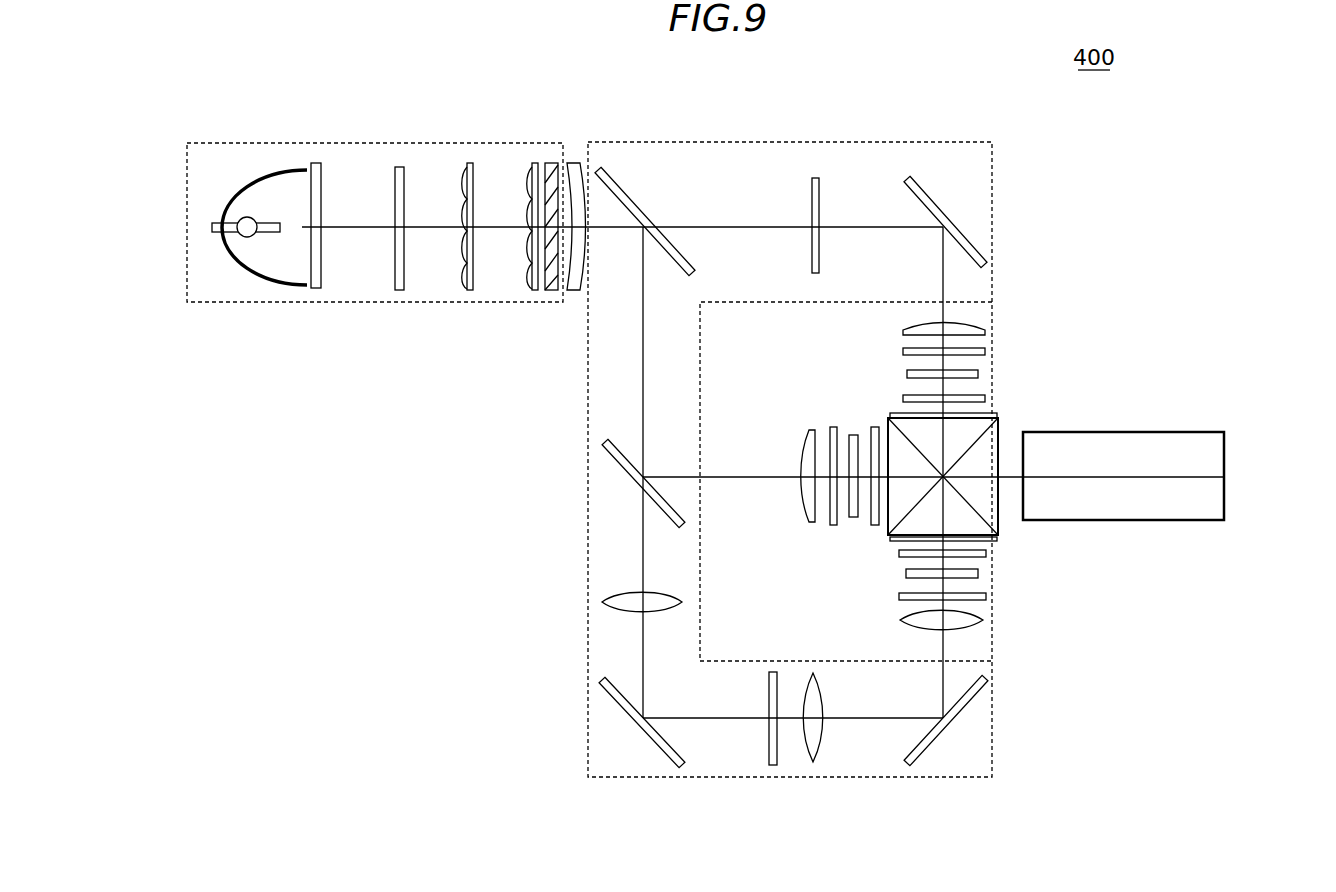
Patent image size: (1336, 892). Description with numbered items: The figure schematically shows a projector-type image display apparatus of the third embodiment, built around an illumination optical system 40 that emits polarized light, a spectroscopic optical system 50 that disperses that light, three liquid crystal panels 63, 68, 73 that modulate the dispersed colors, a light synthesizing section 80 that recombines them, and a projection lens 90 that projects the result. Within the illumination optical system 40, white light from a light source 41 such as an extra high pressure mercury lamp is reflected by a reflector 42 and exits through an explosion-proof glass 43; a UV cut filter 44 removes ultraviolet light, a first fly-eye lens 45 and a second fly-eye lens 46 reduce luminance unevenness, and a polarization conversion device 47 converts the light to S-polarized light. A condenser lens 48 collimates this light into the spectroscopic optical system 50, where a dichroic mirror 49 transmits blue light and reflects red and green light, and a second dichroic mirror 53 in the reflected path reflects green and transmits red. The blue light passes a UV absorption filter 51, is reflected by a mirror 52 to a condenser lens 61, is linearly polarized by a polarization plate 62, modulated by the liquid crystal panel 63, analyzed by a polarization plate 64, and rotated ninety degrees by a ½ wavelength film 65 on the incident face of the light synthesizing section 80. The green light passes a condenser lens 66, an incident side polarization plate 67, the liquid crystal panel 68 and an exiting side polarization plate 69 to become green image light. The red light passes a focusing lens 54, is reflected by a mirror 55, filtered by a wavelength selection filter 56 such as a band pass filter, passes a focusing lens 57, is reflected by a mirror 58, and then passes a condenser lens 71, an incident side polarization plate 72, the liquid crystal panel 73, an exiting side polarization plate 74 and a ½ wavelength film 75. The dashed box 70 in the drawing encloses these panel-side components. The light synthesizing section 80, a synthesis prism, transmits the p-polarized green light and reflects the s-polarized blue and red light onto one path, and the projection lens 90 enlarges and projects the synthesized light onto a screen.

The illumination optical system 40 is at (378, 143).
The light source 41 is at (247, 240).
The reflector 42 is at (262, 172).
The explosion-proof glass 43 is at (314, 290).
The UV cut filter 44 is at (397, 290).
The first fly-eye lens 45 is at (470, 165).
The second fly-eye lens 46 is at (540, 163).
The polarization conversion device 47 is at (550, 291).
The condenser lens 48 is at (574, 291).
The dichroic mirror 49 is at (628, 178).
The spectroscopic optical system 50 is at (726, 142).
The UV absorption filter 51 is at (815, 178).
The mirror 52 is at (940, 180).
The dichroic mirror 53 is at (620, 464).
The focusing lens 54 is at (604, 602).
The mirror 55 is at (604, 681).
The wavelength selection filter 56 is at (775, 766).
The focusing lens 57 is at (818, 764).
The mirror 58 is at (945, 760).
The condenser lens 61 is at (960, 323).
The polarization plate 62 is at (985, 350).
The liquid crystal panel 63 is at (978, 374).
The polarization plate 64 is at (985, 398).
The ½ wavelength film 65 is at (997, 415).
The condenser lens 66 is at (803, 454).
The incident side polarization plate 67 is at (833, 427).
The liquid crystal panel 68 is at (854, 435).
The exiting side polarization plate 69 is at (875, 525).
The light modulation unit 70 is at (846, 481).
The condenser lens 71 is at (972, 627).
The incident side polarization plate 72 is at (986, 597).
The liquid crystal panel 73 is at (978, 573).
The exiting side polarization plate 74 is at (986, 553).
The ½ wavelength film 75 is at (997, 541).
The light synthesizing section 80 is at (892, 418).
The projection lens 90 is at (1224, 447).